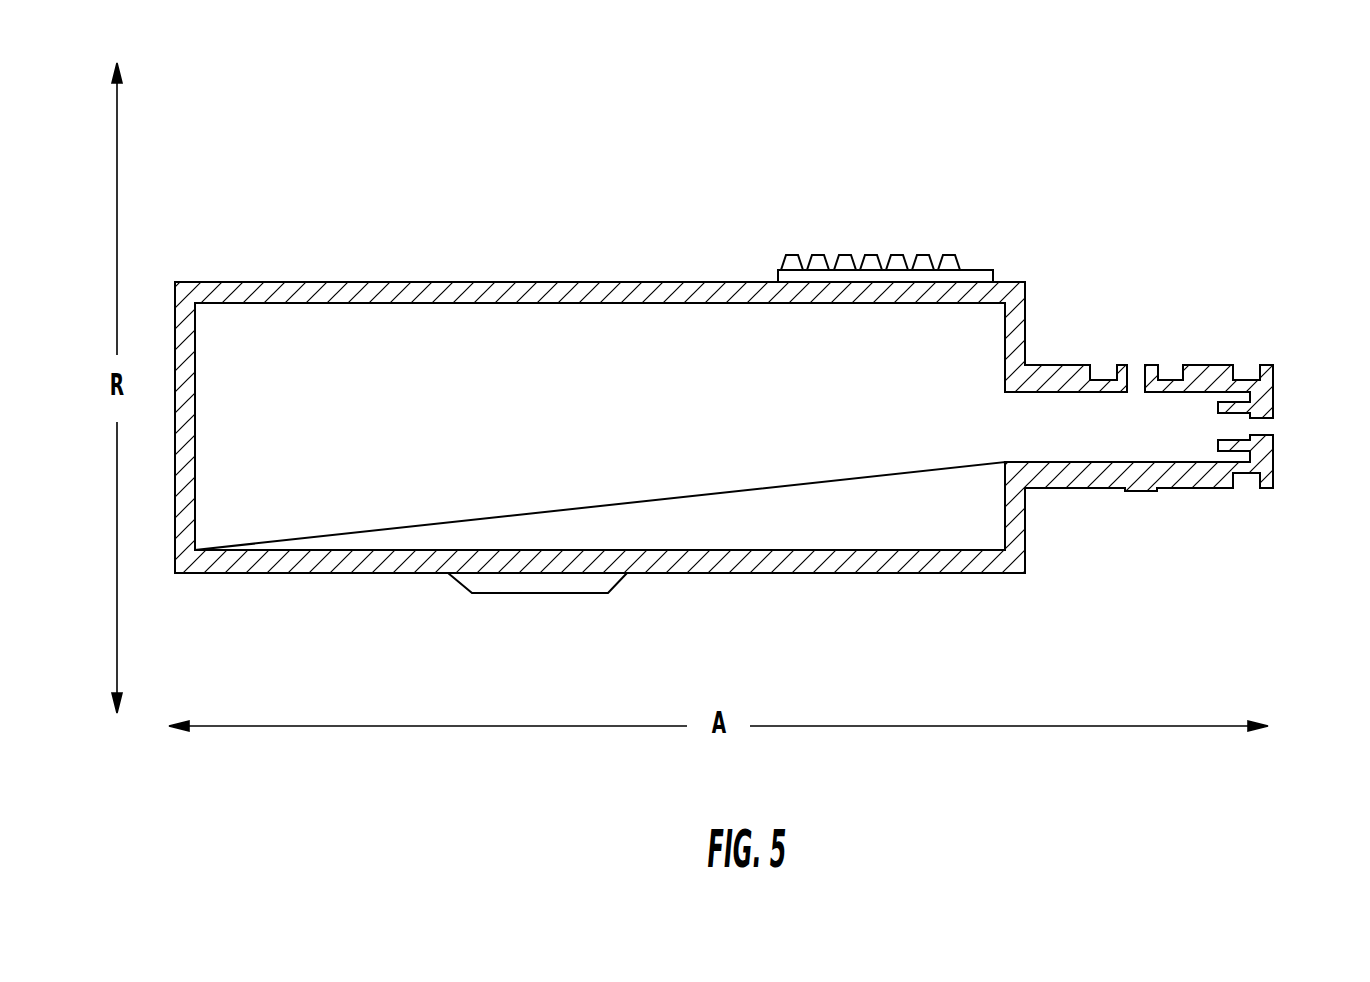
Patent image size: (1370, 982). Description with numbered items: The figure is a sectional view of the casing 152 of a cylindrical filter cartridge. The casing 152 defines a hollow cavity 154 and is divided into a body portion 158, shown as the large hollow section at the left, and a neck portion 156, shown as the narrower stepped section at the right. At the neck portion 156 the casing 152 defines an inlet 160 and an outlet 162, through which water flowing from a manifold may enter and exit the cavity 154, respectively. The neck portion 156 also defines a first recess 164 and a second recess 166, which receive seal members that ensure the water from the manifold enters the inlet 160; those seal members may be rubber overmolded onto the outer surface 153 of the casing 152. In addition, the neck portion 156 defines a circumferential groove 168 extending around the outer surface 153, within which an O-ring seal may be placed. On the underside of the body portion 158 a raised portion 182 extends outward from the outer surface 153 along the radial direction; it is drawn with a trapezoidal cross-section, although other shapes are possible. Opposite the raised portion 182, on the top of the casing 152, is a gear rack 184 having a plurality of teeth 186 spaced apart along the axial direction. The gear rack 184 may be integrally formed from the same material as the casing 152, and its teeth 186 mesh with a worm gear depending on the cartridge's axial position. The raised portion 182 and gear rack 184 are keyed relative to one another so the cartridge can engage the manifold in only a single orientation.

The casing 152 is at (1098, 603).
The outer surface 153 is at (595, 282).
The cavity 154 is at (546, 439).
The neck portion 156 is at (1065, 488).
The body portion 158 is at (207, 573).
The inlet 160 is at (1137, 368).
The outlet 162 is at (1268, 426).
The first recess 164 is at (1105, 372).
The second recess 166 is at (1169, 370).
The circumferential groove 168 is at (1246, 370).
The raised portion 182 is at (572, 593).
The gear rack 184 is at (990, 270).
The teeth 186 is at (792, 255).